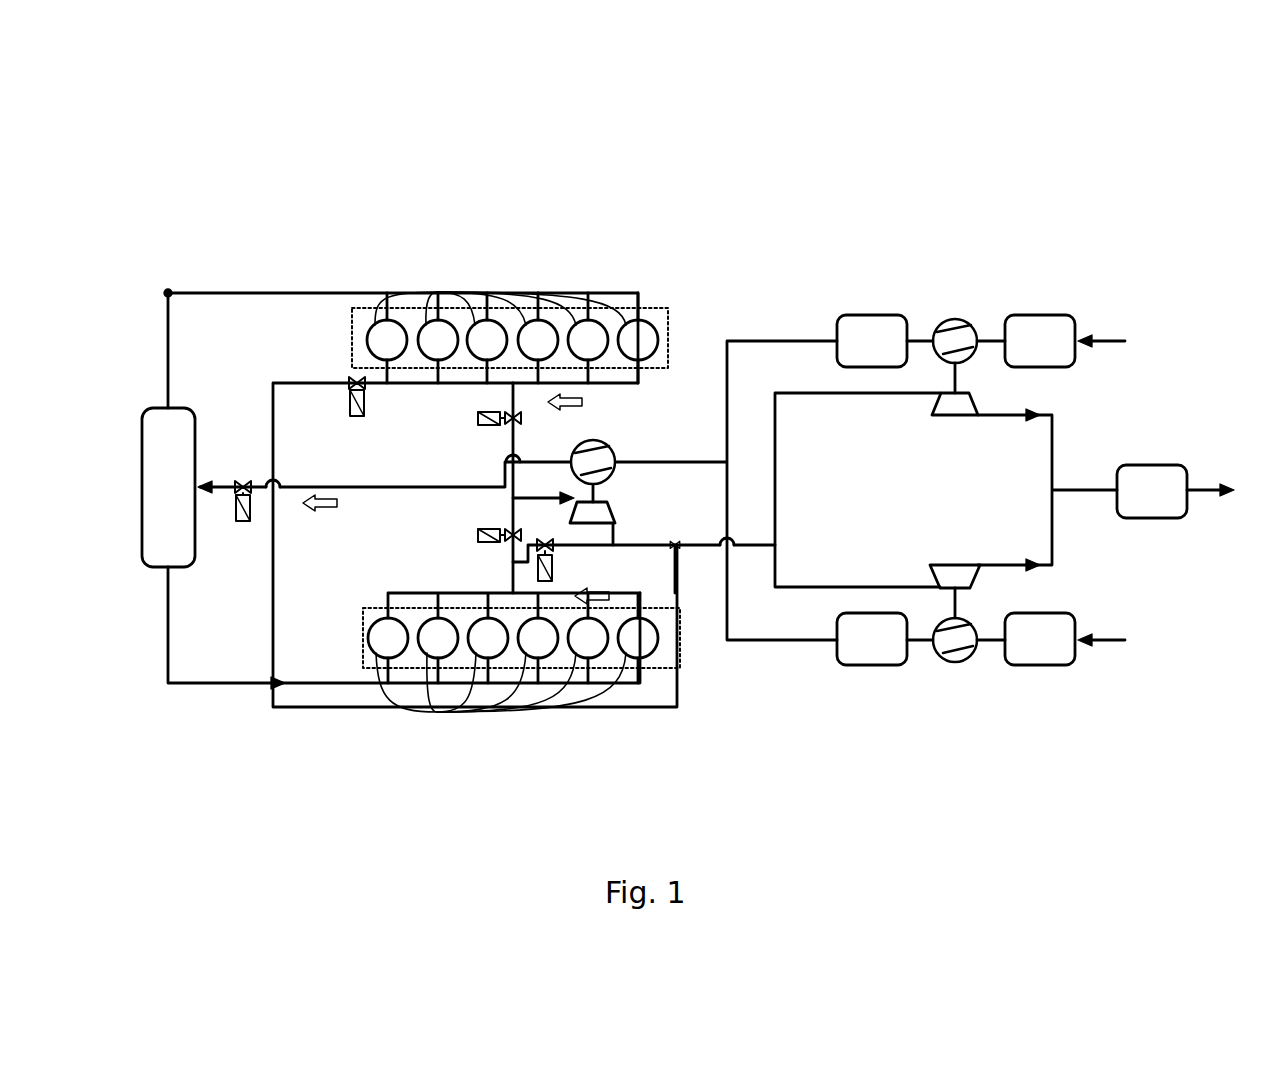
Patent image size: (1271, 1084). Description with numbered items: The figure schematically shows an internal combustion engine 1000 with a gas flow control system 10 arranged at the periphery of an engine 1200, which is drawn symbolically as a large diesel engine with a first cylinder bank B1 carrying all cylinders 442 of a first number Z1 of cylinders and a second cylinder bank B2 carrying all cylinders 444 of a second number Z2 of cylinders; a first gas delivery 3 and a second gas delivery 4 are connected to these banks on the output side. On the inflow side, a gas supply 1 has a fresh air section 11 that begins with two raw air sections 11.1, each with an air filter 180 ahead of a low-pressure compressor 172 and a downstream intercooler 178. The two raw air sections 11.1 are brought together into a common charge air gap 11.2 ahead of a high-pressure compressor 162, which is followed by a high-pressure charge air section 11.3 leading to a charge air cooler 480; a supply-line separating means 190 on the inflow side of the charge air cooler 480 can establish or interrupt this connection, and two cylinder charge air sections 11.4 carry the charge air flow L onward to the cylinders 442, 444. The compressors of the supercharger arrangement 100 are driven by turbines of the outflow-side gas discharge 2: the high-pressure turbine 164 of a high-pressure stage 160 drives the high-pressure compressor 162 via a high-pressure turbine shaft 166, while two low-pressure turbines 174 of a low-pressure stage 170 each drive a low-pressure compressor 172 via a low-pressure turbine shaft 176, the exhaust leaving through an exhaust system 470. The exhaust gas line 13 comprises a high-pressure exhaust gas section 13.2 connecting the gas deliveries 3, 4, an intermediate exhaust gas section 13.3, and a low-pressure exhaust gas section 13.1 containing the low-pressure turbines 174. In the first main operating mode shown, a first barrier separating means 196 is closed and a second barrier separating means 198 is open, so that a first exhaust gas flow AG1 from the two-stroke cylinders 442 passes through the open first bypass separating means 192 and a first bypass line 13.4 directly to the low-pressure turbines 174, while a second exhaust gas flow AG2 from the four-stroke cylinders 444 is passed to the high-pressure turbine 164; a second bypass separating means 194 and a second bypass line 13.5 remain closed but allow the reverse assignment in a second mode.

The inflow-side gas supply 1 is at (210, 275).
The outflow-side gas discharge 2 is at (805, 517).
The first gas delivery 3 is at (490, 331).
The second gas delivery 4 is at (496, 656).
The gas flow control system 10 is at (682, 258).
The fresh air section 11 is at (708, 432).
The raw air section 11.1 is at (1100, 338).
The common charge air gap 11.2 is at (662, 465).
The high-pressure charge air section 11.3 is at (358, 490).
The cylinder charge air section 11.4 is at (278, 292).
The exhaust gas line 13 is at (440, 530).
The low-pressure exhaust gas section 13.1 is at (806, 395).
The high-pressure exhaust gas section 13.2 is at (510, 524).
The intermediate exhaust gas section 13.3 is at (684, 549).
The first bypass line 13.4 is at (270, 383).
The second bypass line 13.5 is at (560, 547).
The supercharger arrangement 100 is at (897, 173).
The high-pressure stage 160 is at (636, 434).
The high-pressure compressor 162 is at (590, 440).
The high-pressure turbine 164 is at (620, 512).
The high-pressure turbine shaft 166 is at (598, 488).
The low-pressure stage 170 is at (968, 231).
The low-pressure compressor 172 is at (962, 330).
The low-pressure turbine 174 is at (977, 420).
The low-pressure turbine shaft 176 is at (960, 381).
The intercooler 178 is at (860, 338).
The air filter 180 is at (1040, 338).
The supply-line separating means 190 is at (243, 480).
The first bypass separating means 192 is at (355, 418).
The second bypass separating means 194 is at (554, 566).
The first barrier separating means 196 is at (485, 427).
The second barrier separating means 198 is at (485, 541).
The cylinders of the first number of cylinders 442 is at (437, 292).
The cylinders of the second number of cylinders 444 is at (437, 712).
The exhaust system 470 is at (1152, 484).
The charge air cooler 480 is at (163, 450).
The internal combustion engine 1000 is at (1032, 108).
The engine 1200 is at (480, 235).
The first exhaust gas flow AG1 is at (556, 417).
The second exhaust gas flow AG2 is at (616, 580).
The first cylinder bank B1 is at (700, 325).
The second cylinder bank B2 is at (698, 645).
The charge air flow L is at (320, 512).
The first number of cylinders Z1 is at (357, 316).
The second number of cylinders Z2 is at (360, 678).